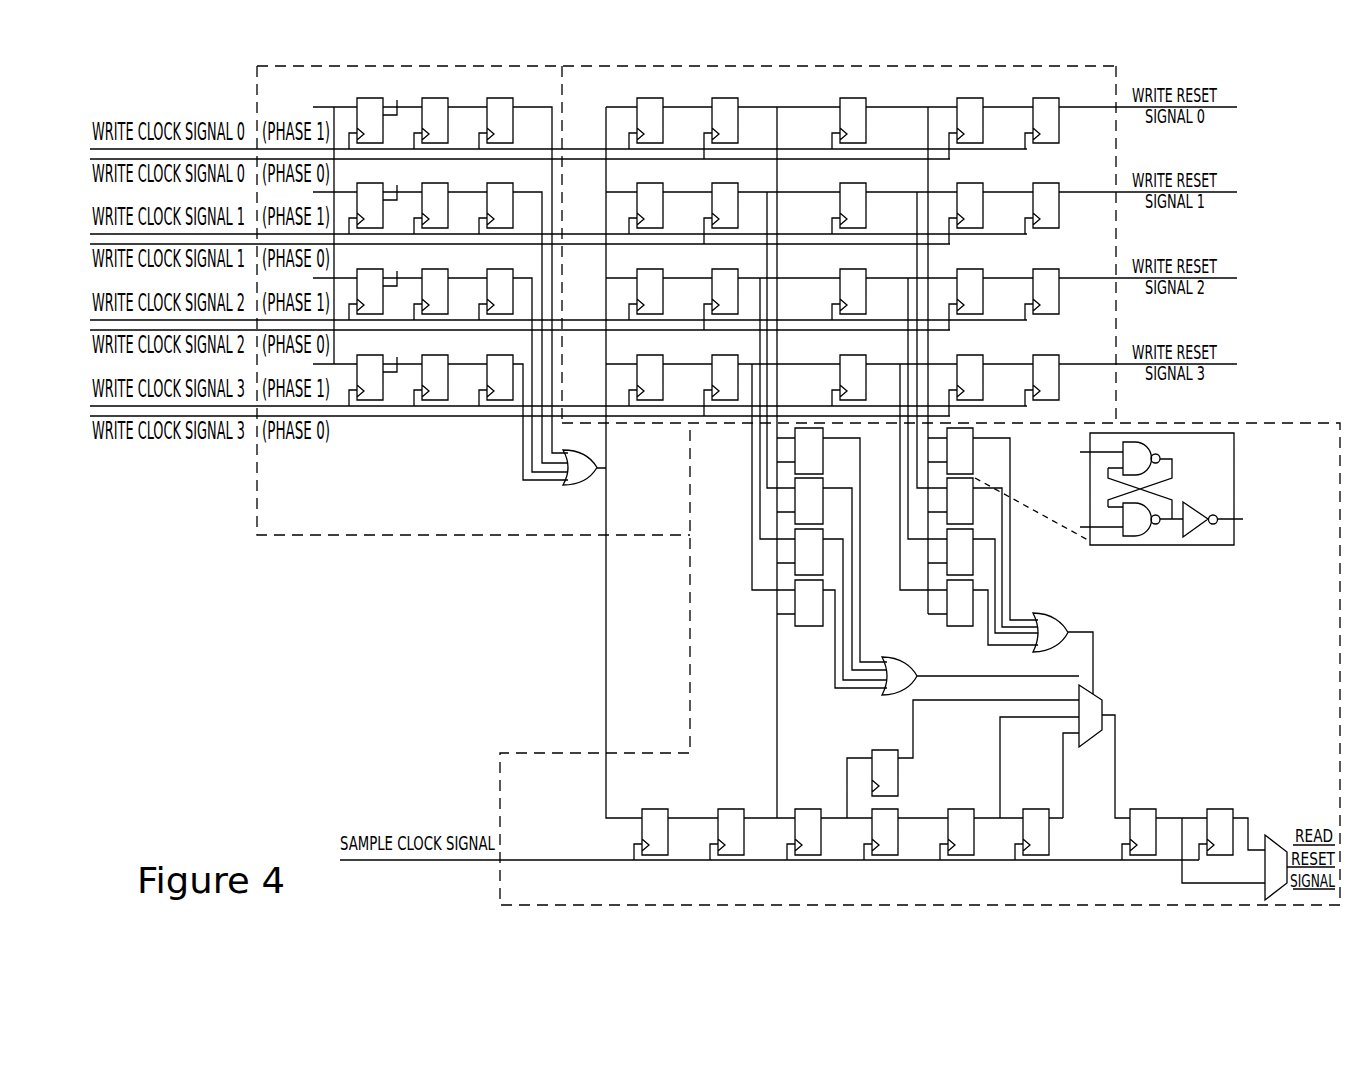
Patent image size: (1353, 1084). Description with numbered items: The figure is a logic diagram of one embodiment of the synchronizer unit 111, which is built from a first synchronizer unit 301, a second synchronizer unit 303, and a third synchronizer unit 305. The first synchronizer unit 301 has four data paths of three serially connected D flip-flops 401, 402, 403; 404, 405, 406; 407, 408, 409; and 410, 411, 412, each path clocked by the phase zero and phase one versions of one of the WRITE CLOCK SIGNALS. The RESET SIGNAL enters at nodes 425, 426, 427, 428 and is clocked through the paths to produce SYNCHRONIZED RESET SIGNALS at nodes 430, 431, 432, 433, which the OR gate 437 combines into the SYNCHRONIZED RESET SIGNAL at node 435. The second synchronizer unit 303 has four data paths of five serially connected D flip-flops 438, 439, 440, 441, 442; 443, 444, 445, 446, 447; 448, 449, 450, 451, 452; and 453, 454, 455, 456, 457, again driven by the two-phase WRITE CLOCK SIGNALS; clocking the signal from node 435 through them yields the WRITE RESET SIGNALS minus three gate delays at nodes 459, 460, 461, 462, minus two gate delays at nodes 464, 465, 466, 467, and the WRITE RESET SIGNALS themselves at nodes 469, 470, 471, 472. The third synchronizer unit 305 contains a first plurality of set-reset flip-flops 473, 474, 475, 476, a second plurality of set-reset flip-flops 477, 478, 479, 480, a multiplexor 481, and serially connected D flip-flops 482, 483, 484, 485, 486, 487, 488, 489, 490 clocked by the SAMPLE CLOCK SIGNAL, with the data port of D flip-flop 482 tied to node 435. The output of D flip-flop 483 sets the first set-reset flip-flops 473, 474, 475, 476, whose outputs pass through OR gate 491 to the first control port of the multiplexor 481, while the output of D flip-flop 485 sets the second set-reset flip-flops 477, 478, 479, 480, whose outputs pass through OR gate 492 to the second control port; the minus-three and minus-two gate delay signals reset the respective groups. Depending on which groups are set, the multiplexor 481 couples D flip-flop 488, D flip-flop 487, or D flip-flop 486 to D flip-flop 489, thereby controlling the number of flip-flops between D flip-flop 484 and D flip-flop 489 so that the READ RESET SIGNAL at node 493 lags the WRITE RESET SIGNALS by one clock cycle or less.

The synchronizer unit 111 is at (1275, 147).
The first synchronizer unit 301 is at (305, 536).
The second synchronizer unit 303 is at (1117, 414).
The third synchronizer unit 305 is at (1288, 423).
The D flip-flop 401 is at (397, 100).
The D flip-flop 402 is at (423, 98).
The D flip-flop 403 is at (488, 98).
The D flip-flop 404 is at (397, 185).
The D flip-flop 405 is at (423, 183).
The D flip-flop 406 is at (488, 183).
The D flip-flop 407 is at (397, 271).
The D flip-flop 408 is at (423, 269).
The D flip-flop 409 is at (488, 269).
The D flip-flop 410 is at (397, 357).
The D flip-flop 411 is at (423, 355).
The D flip-flop 412 is at (502, 400).
The node 425 is at (356, 85).
The node 426 is at (356, 170).
The node 427 is at (356, 256).
The node 428 is at (356, 342).
The node 430 is at (538, 107).
The node 431 is at (538, 192).
The node 432 is at (538, 278).
The node 433 is at (538, 364).
The node 435 is at (606, 468).
The OR gate 437 is at (572, 485).
The D flip-flop 438 is at (638, 98).
The D flip-flop 439 is at (712, 119).
The D flip-flop 440 is at (840, 119).
The D flip-flop 441 is at (969, 98).
The D flip-flop 442 is at (1033, 119).
The D flip-flop 443 is at (638, 183).
The D flip-flop 444 is at (712, 204).
The D flip-flop 445 is at (840, 204).
The D flip-flop 446 is at (969, 183).
The D flip-flop 447 is at (1033, 204).
The D flip-flop 448 is at (638, 269).
The D flip-flop 449 is at (712, 290).
The D flip-flop 450 is at (840, 290).
The D flip-flop 451 is at (969, 269).
The D flip-flop 452 is at (1033, 290).
The D flip-flop 453 is at (638, 355).
The D flip-flop 454 is at (712, 376).
The D flip-flop 455 is at (840, 376).
The D flip-flop 456 is at (969, 355).
The D flip-flop 457 is at (1033, 376).
The node 459 is at (751, 91).
The node 460 is at (751, 176).
The node 461 is at (751, 262).
The node 462 is at (751, 348).
The node 464 is at (875, 90).
The node 465 is at (875, 175).
The node 466 is at (875, 261).
The node 467 is at (875, 347).
The node 469 is at (1071, 90).
The node 470 is at (1071, 175).
The node 471 is at (1071, 261).
The node 472 is at (1071, 347).
The set-reset flip-flop 473 is at (823, 450).
The set-reset flip-flop 474 is at (823, 500).
The set-reset flip-flop 475 is at (823, 551).
The set-reset flip-flop 476 is at (809, 626).
The set-reset flip-flop 477 is at (973, 450).
The set-reset flip-flop 478 is at (973, 500).
The set-reset flip-flop 479 is at (973, 551).
The set-reset flip-flop 480 is at (960, 626).
The multiplexor 481 is at (1102, 708).
The D flip-flop 482 is at (655, 809).
The D flip-flop 483 is at (731, 809).
The D flip-flop 484 is at (808, 809).
The D flip-flop 485 is at (898, 832).
The D flip-flop 486 is at (880, 750).
The D flip-flop 487 is at (961, 809).
The D flip-flop 488 is at (1036, 809).
The D flip-flop 489 is at (1143, 809).
The D flip-flop 490 is at (1220, 809).
The OR gate 491 is at (897, 657).
The OR gate 492 is at (1058, 618).
The node 493 is at (1283, 838).